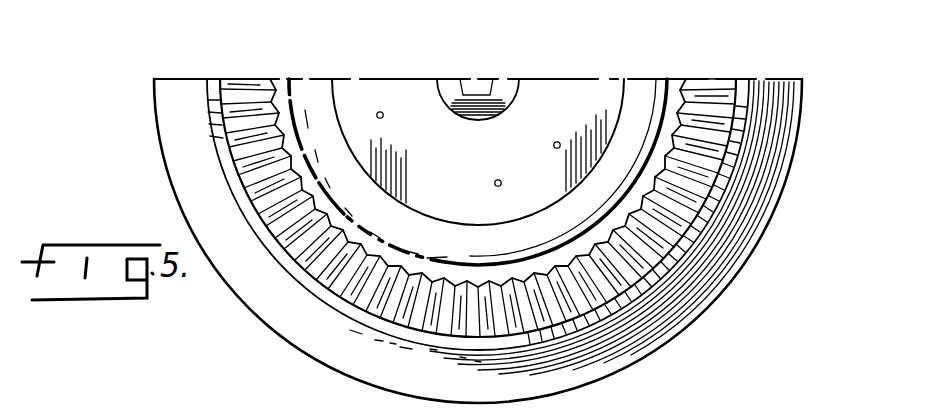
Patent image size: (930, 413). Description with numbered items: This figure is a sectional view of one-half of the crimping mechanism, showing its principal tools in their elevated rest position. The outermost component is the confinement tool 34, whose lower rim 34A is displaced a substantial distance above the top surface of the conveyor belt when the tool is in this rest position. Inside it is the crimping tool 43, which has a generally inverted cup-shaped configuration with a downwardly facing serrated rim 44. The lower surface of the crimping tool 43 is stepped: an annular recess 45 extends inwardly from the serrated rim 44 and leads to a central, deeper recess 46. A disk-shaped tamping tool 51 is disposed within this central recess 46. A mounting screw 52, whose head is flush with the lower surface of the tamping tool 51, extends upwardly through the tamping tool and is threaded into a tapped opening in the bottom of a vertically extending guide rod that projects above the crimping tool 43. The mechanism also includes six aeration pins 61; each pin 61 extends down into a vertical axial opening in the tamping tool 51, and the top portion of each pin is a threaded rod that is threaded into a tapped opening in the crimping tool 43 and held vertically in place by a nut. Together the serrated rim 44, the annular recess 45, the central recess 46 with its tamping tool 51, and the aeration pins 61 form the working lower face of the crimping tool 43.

The confinement tool 34 is at (645, 350).
The lower rim 34A is at (372, 327).
The crimping tool 43 is at (342, 227).
The serrated rim 44 is at (692, 195).
The annular recess 45 is at (478, 203).
The central recess 46 is at (333, 112).
The tamping tool 51 is at (497, 158).
The mounting screw 52 is at (503, 97).
The aeration pins 61 is at (508, 165).